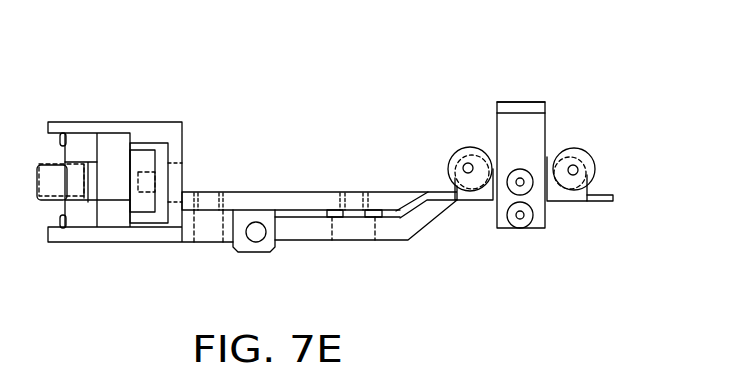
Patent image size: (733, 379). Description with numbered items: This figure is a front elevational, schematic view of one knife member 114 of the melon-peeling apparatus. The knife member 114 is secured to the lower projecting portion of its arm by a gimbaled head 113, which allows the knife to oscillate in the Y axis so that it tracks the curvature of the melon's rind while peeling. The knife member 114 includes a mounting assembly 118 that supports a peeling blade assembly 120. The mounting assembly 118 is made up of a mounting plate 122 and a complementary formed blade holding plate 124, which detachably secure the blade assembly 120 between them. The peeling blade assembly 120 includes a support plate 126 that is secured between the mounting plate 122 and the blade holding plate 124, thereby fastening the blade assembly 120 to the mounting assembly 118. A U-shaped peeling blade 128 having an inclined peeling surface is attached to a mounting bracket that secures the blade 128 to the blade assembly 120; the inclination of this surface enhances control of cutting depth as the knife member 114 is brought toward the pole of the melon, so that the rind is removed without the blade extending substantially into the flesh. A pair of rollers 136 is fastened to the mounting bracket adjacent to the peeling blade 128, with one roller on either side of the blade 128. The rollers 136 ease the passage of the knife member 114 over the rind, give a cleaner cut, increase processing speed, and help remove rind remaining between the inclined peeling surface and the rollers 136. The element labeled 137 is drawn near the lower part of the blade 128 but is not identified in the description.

The gimbaled head 113 is at (142, 122).
The knife member 114 is at (518, 92).
The mounting assembly 118 is at (337, 255).
The peeling blade assembly 120 is at (592, 135).
The mounting plate 122 is at (405, 230).
The blade holding plate 124 is at (252, 192).
The support plate 126 is at (423, 200).
The U-shaped peeling blade 128 is at (548, 125).
The roller 136 is at (455, 147).
The lower pin 137 is at (545, 228).